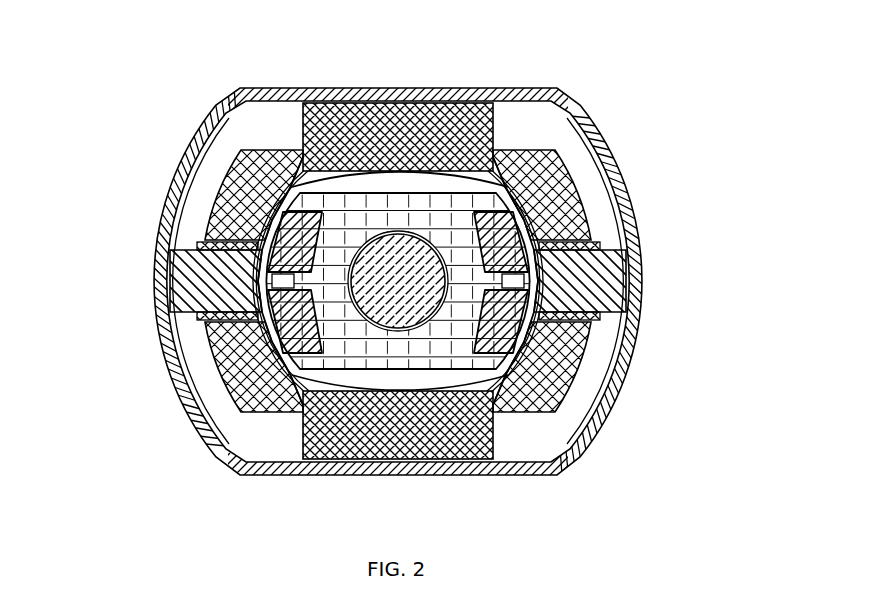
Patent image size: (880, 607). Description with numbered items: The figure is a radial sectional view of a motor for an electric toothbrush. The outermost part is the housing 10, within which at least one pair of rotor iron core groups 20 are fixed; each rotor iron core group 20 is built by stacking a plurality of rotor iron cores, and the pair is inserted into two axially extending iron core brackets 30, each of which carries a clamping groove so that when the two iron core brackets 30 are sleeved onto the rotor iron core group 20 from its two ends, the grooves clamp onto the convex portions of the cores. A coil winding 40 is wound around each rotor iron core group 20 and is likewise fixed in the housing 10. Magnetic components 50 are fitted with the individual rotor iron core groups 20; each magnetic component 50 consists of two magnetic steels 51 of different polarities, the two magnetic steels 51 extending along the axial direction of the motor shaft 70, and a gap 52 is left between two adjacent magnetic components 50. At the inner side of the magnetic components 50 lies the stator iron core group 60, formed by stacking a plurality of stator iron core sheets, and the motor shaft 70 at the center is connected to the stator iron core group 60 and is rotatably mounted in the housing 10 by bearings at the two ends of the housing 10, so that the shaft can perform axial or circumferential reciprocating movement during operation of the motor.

The housing 10 is at (580, 100).
The rotor iron core group 20 is at (160, 252).
The iron core bracket 30 is at (470, 115).
The coil winding 40 is at (587, 184).
The magnetic component 50 is at (403, 280).
The magnetic steel 51 is at (525, 241).
The gap 52 is at (402, 178).
The stator iron core group 60 is at (340, 220).
The motor shaft 70 is at (406, 312).